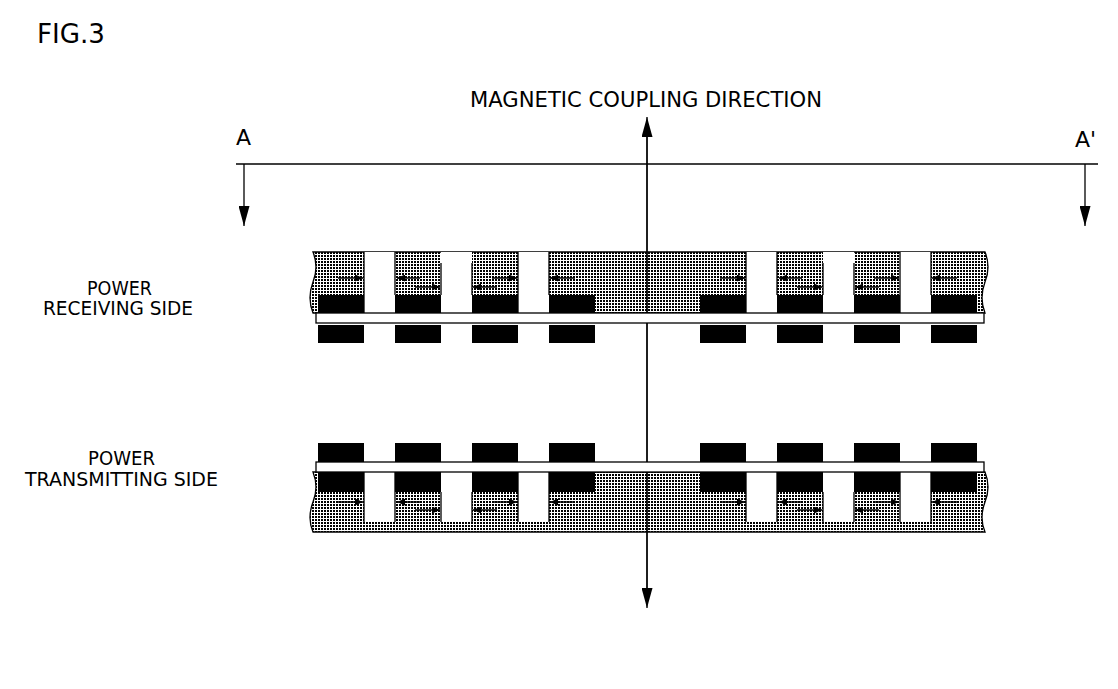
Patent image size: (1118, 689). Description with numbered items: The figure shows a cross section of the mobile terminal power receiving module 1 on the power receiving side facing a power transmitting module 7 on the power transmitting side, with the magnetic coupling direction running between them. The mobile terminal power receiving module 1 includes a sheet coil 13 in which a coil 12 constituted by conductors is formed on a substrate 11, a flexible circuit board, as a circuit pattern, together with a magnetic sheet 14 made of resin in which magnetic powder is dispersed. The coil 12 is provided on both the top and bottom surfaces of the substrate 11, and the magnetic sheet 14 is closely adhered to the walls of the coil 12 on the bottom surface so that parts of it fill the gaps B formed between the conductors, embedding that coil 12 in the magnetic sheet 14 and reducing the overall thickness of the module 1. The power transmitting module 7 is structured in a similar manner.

The mobile terminal power receiving module 1 is at (905, 240).
The power transmitting module 7 is at (948, 543).
The substrate 11 is at (326, 318).
The coil 12 is at (318, 300).
The sheet coil 13 is at (258, 287).
The magnetic sheet 14 is at (322, 278).